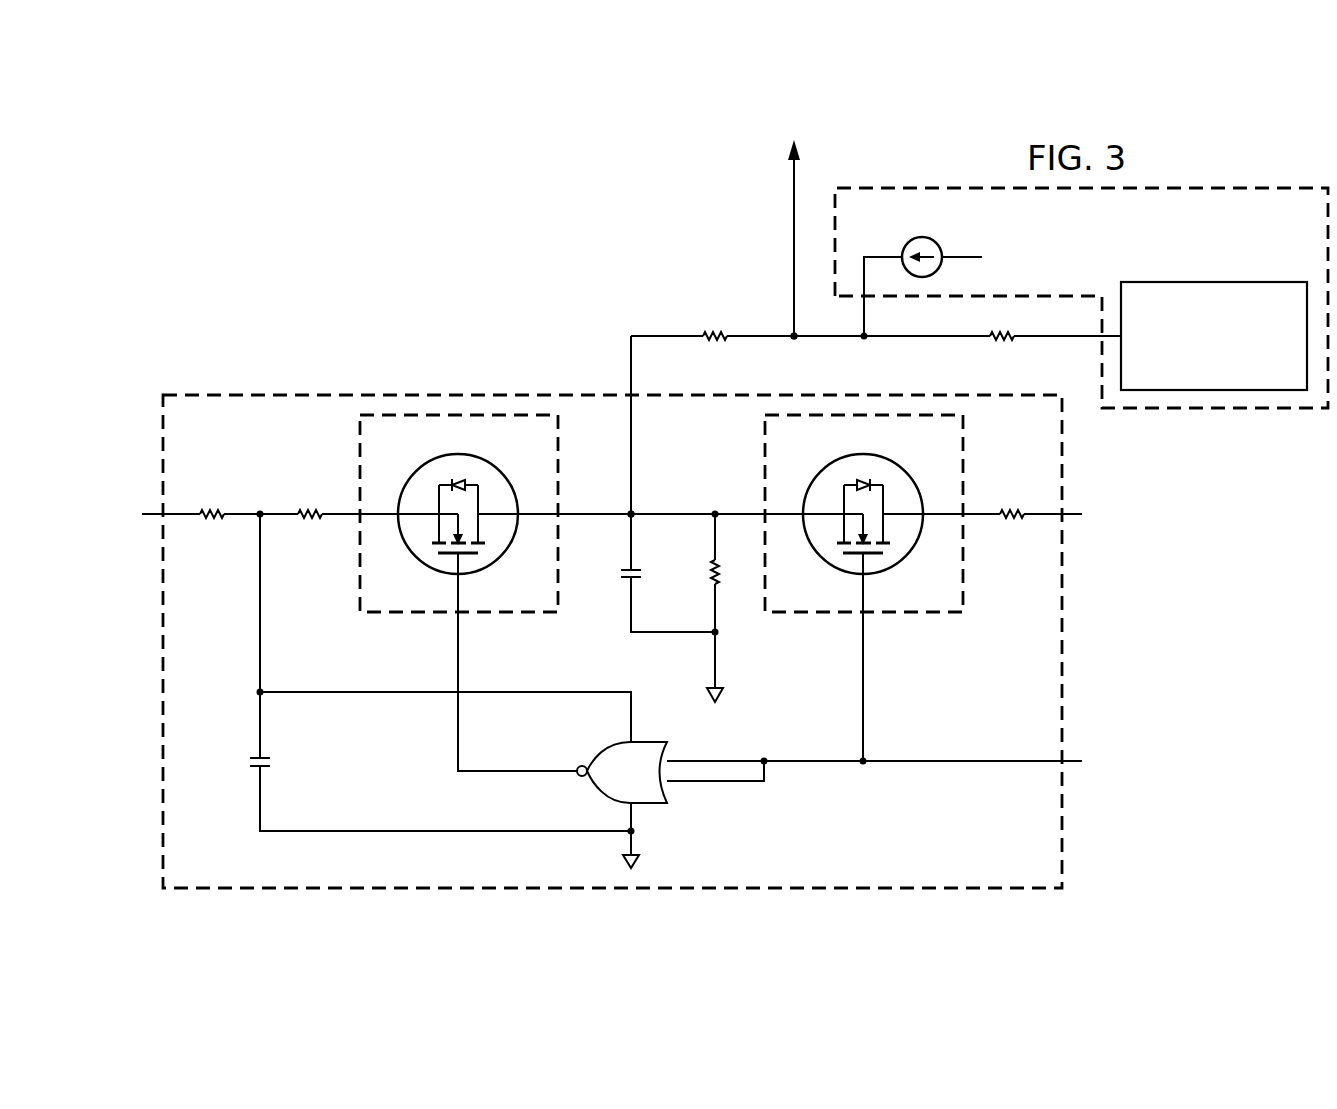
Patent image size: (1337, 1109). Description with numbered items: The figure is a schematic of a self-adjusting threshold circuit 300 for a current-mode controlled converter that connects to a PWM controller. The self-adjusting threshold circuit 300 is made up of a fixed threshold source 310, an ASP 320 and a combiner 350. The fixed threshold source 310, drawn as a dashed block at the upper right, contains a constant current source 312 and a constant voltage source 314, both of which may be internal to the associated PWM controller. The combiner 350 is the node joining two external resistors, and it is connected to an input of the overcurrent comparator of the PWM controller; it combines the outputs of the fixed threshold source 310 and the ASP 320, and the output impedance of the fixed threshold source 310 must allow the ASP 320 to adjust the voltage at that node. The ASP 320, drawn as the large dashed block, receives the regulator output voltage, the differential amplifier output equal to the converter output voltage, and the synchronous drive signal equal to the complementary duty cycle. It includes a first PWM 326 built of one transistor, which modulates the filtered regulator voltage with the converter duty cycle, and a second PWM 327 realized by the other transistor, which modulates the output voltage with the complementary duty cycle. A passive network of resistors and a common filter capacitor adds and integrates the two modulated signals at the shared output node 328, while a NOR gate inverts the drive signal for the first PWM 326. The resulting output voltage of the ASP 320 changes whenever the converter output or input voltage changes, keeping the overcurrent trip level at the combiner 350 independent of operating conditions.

The self-adjusting threshold circuit 300 is at (484, 245).
The fixed threshold source 310 is at (1226, 184).
The constant current source 312 is at (934, 240).
The constant voltage source 314 is at (1216, 281).
The ASP 320 is at (1070, 694).
The first PWM 326 is at (352, 466).
The second PWM 327 is at (972, 563).
The node 328 is at (636, 511).
The combiner 350 is at (797, 340).